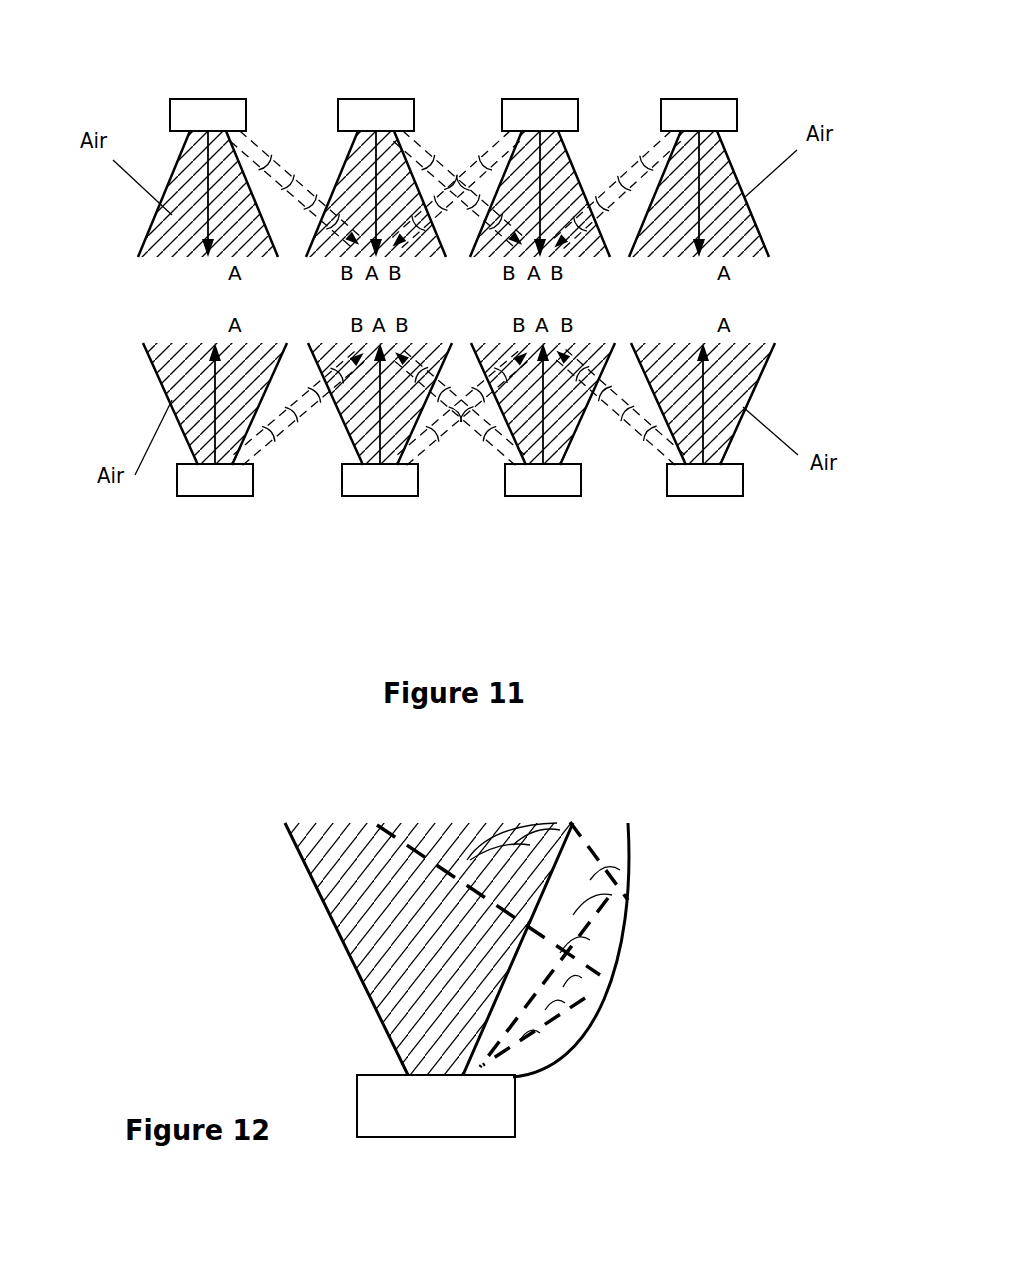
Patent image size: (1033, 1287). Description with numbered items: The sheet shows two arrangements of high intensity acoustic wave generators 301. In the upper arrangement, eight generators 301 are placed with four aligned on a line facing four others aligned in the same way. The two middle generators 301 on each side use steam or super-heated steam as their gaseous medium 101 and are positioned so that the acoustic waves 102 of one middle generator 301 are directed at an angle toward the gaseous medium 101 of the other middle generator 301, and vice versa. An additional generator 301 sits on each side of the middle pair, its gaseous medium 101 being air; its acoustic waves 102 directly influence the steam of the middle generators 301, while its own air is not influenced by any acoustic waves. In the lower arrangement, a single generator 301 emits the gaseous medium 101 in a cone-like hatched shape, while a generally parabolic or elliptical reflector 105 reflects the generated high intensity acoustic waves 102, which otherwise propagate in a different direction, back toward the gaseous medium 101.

In FIG. 11, the gaseous medium 101 is at (352, 140).
In FIG. 12, the gaseous medium 101 is at (352, 910).
In FIG. 11, the high intensity acoustic waves 102 is at (477, 160).
In FIG. 12, the high intensity acoustic waves 102 is at (540, 1030).
In FIG. 12, the reflector 105 is at (538, 1068).
In FIG. 11, the high intensity acoustic wave generator 301 is at (198, 100).
In FIG. 12, the high intensity acoustic wave generator 301 is at (378, 1165).